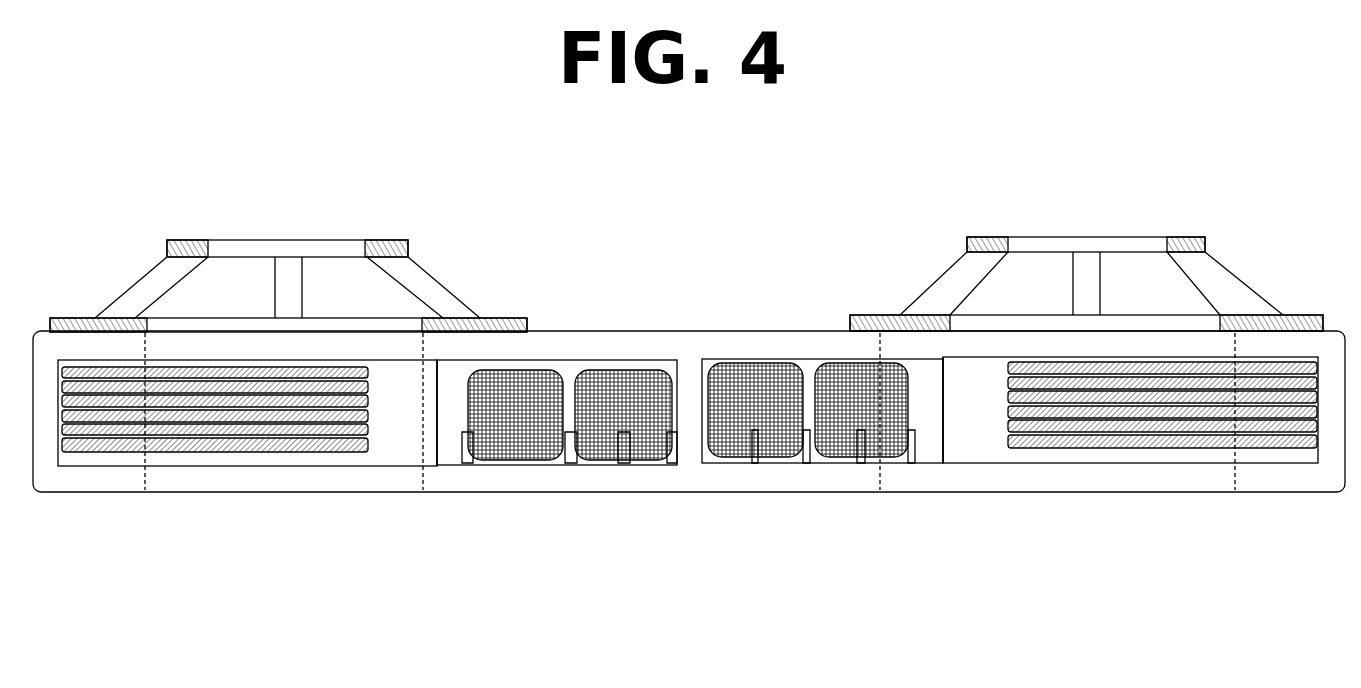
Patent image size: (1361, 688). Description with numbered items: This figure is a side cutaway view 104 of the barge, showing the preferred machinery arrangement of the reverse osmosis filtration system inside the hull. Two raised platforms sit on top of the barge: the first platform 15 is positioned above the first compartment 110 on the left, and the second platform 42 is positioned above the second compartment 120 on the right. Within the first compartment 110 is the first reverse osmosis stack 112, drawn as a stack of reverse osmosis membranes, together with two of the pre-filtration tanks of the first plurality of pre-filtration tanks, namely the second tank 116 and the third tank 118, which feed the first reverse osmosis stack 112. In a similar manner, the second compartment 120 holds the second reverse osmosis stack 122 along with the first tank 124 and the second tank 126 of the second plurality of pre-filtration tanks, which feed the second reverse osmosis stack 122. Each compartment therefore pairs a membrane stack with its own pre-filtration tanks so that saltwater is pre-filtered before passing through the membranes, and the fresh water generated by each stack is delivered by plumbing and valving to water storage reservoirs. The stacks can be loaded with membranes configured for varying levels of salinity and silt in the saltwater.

The first platform 15 is at (168, 246).
The second platform 42 is at (1203, 238).
The cutaway view 104 is at (670, 480).
The first compartment 110 is at (448, 448).
The first reverse osmosis stack 112 is at (335, 448).
The second tank 116 is at (547, 370).
The third tank 118 is at (633, 372).
The second compartment 120 is at (927, 450).
The second reverse osmosis stack 122 is at (1023, 440).
The first tank 124 is at (765, 448).
The second tank 126 is at (885, 443).